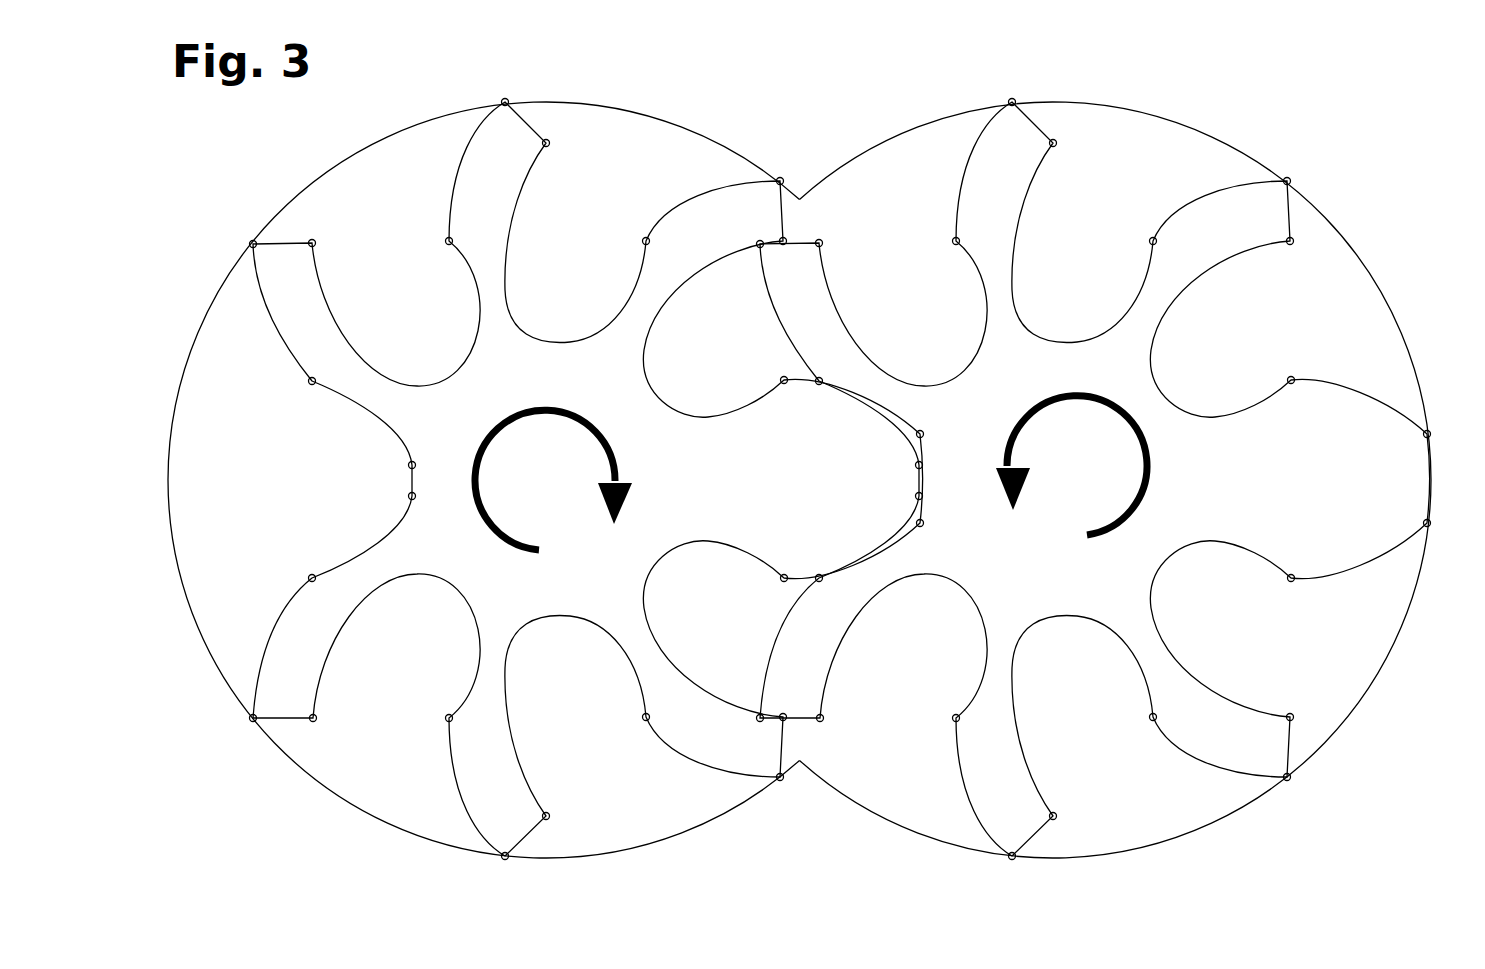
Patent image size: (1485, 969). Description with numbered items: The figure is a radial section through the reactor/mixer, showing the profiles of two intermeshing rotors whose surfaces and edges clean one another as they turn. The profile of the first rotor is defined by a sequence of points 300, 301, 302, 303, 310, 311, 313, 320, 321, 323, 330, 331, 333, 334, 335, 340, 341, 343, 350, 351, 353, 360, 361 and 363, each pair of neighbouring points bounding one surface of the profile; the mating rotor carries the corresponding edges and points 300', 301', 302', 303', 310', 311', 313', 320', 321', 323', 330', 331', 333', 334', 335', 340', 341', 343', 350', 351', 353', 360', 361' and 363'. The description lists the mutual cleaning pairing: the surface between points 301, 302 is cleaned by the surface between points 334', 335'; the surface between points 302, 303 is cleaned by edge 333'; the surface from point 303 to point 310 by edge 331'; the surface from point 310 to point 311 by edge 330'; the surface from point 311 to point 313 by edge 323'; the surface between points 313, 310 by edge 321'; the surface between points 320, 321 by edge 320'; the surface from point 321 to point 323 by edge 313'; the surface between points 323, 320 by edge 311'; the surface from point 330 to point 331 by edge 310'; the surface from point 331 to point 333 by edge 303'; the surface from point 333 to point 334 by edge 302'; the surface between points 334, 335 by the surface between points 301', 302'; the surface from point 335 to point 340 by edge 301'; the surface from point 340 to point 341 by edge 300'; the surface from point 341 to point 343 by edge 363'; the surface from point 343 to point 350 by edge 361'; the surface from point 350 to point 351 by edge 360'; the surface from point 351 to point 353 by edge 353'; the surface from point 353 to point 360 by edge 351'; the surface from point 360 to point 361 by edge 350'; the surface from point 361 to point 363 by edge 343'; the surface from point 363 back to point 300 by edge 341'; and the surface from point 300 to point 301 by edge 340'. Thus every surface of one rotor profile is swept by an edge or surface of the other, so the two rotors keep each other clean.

The profile point 300 is at (1283, 367).
The profile point 301 is at (1450, 444).
The profile point 302 is at (1448, 525).
The profile point 303 is at (1290, 563).
The profile point 310 is at (1290, 703).
The profile point 311 is at (1305, 791).
The profile point 313 is at (1130, 720).
The profile point 320 is at (1077, 822).
The profile point 321 is at (1000, 874).
The profile point 323 is at (934, 720).
The profile point 330 is at (842, 720).
The profile point 331 is at (745, 705).
The profile point 333 is at (820, 594).
The profile point 334 is at (943, 505).
The profile point 335 is at (943, 465).
The profile point 340 is at (832, 371).
The profile point 341 is at (738, 262).
The profile point 343 is at (840, 243).
The profile point 350 is at (933, 245).
The profile point 351 is at (1005, 87).
The profile point 353 is at (1074, 148).
The profile point 360 is at (1130, 238).
The profile point 361 is at (1304, 171).
The profile point 363 is at (1311, 254).
The edge 300' is at (784, 400).
The edge 301' is at (891, 437).
The edge 302' is at (889, 520).
The edge 303' is at (779, 564).
The edge 310' is at (774, 734).
The edge 311' is at (794, 795).
The edge 313' is at (620, 726).
The edge 320' is at (570, 808).
The edge 321' is at (511, 867).
The edge 323' is at (424, 705).
The edge 330' is at (317, 736).
The edge 331' is at (230, 735).
The edge 333' is at (329, 594).
The profile point 334' is at (437, 503).
The profile point 335' is at (437, 468).
The edge 340' is at (292, 397).
The edge 341' is at (227, 232).
The edge 343' is at (332, 232).
The edge 350' is at (422, 245).
The edge 351' is at (485, 90).
The edge 353' is at (569, 152).
The edge 360' is at (612, 245).
The edge 361' is at (760, 160).
The edge 363' is at (755, 227).